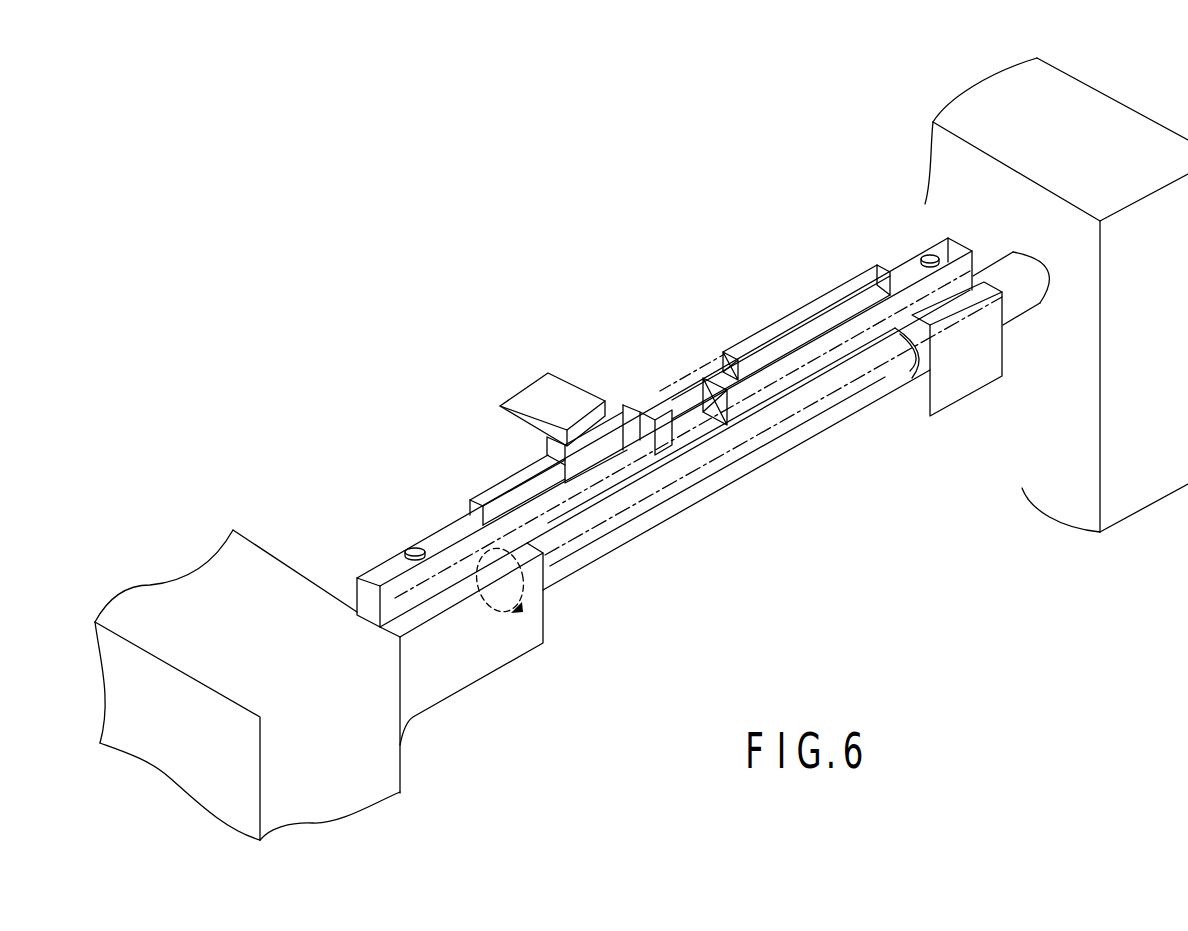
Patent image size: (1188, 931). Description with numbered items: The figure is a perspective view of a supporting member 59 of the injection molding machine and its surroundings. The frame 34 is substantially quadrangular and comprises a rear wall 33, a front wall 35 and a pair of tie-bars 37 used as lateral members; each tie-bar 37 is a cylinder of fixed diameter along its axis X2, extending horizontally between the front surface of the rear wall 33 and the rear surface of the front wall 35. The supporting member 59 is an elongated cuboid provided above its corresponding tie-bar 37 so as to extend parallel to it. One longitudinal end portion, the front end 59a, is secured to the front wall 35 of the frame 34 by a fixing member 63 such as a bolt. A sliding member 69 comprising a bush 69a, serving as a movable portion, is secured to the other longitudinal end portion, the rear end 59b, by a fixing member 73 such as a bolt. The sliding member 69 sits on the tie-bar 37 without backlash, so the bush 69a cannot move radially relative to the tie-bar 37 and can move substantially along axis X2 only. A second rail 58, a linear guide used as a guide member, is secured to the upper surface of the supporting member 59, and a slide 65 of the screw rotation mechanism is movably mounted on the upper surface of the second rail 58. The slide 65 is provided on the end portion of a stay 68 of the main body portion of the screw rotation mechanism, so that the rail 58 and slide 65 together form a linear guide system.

The rear wall 33 is at (1112, 113).
The frame 34 is at (138, 547).
The front wall 35 is at (387, 718).
The tie-bar 37 is at (777, 446).
The second rail 58 is at (492, 488).
The supporting member 59 is at (639, 405).
The front end portion 59a is at (357, 597).
The rear end portion 59b is at (900, 263).
The fixing member 63 is at (417, 548).
The slide 65 is at (627, 412).
The stay 68 is at (566, 396).
The sliding member 69 is at (973, 385).
The bush 69a is at (902, 357).
The fixing member 73 is at (928, 256).
The axis of tie-bar X2 is at (700, 472).